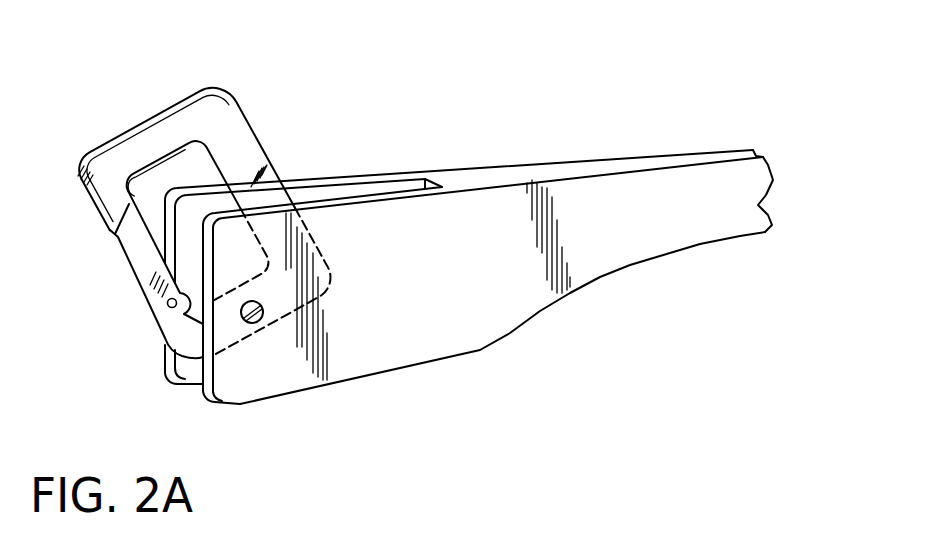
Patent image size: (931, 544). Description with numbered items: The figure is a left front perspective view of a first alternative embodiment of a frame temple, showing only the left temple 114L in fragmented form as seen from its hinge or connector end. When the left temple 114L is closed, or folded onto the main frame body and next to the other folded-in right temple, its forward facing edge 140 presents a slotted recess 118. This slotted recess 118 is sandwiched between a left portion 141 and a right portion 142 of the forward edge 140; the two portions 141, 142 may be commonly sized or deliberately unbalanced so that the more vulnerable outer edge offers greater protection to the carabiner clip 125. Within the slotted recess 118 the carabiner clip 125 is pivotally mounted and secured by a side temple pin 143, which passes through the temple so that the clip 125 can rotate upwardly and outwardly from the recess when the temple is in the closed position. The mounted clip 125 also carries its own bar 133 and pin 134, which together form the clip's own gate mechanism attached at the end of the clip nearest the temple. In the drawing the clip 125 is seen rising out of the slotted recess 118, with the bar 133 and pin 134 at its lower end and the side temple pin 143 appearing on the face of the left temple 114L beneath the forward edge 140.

The left temple 114L is at (437, 317).
The slotted recess 118 is at (373, 186).
The carabiner clip 125 is at (228, 101).
The bar 133 is at (145, 265).
The pin 134 is at (167, 305).
The forward facing edge 140 is at (223, 377).
The left portion of forward edge 141 is at (341, 199).
The right portion of forward edge 142 is at (318, 183).
The side temple pin 143 is at (260, 323).